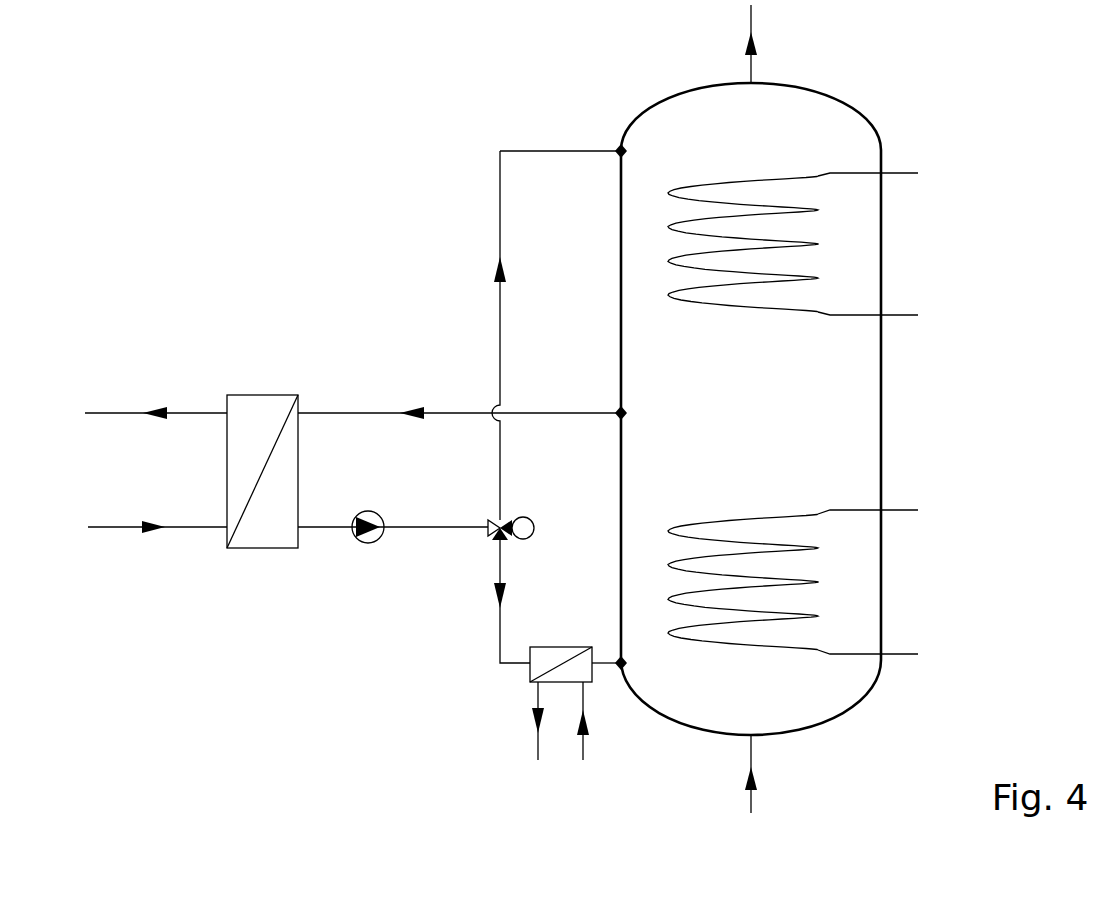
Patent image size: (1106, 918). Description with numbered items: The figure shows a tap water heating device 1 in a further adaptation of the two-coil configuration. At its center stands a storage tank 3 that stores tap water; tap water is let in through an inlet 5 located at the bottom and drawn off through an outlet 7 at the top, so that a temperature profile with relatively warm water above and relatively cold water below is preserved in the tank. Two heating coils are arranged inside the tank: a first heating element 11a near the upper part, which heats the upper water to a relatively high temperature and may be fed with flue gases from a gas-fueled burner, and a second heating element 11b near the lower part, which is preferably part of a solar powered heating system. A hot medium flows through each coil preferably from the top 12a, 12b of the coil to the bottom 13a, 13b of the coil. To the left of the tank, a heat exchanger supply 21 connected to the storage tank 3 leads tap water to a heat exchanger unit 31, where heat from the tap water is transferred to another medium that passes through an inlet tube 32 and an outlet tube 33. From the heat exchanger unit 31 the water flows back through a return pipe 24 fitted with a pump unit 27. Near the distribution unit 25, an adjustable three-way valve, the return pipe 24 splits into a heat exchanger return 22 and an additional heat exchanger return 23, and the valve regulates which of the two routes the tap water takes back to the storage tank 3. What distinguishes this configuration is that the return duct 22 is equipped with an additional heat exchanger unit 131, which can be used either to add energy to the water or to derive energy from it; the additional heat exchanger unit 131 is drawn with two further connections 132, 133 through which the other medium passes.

The tap water heating device 1 is at (990, 173).
The storage tank 3 is at (693, 87).
The inlet 5 is at (752, 748).
The outlet 7 is at (750, 67).
The first heating element 11a is at (748, 205).
The second heating element 11b is at (753, 543).
The top of the coil 12a is at (893, 173).
The top of the coil 12b is at (896, 510).
The bottom of the coil 13a is at (893, 313).
The bottom of the coil 13b is at (896, 655).
The heat exchanger supply 21 is at (525, 413).
The heat exchanger return 22 is at (502, 630).
The additional heat exchanger return 23 is at (510, 150).
The return pipe 24 is at (433, 527).
The distribution unit 25 is at (497, 520).
The pump unit 27 is at (362, 537).
The heat exchanger unit 31 is at (253, 393).
The inlet tube 32 is at (122, 524).
The outlet tube 33 is at (127, 411).
The additional heat exchanger unit 131 is at (530, 673).
The secondary inlet line 132 is at (583, 743).
The secondary outlet line 133 is at (538, 750).